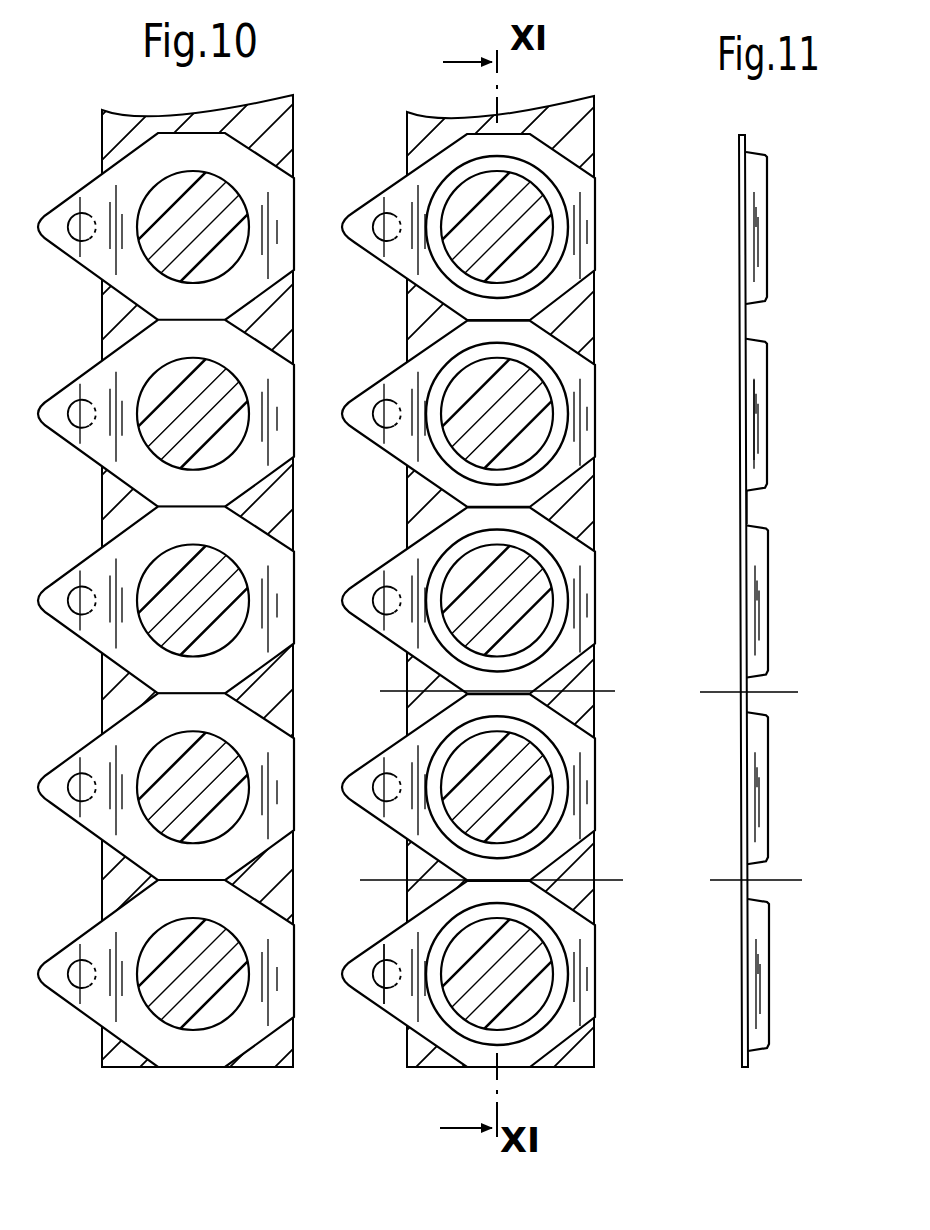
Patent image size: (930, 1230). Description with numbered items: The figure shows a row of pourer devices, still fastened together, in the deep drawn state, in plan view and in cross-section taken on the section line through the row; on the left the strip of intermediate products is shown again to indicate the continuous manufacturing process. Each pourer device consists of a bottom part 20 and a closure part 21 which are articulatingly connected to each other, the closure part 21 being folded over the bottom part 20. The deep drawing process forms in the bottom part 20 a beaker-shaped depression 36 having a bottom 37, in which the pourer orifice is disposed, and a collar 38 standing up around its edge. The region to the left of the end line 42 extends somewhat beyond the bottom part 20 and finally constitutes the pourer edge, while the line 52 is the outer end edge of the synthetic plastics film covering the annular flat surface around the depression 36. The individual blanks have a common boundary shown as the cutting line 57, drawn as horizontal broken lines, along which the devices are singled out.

In FIG. 11, the bottom part 20 is at (766, 208).
In FIG. 11, the closure part 21 is at (737, 163).
In FIG. 10, the beaker-shaped depression 36 is at (467, 170).
In FIG. 11, the beaker-shaped depression 36 is at (757, 418).
In FIG. 10, the bottom 37 is at (454, 191).
In FIG. 11, the bottom 37 is at (769, 371).
In FIG. 11, the collar 38 is at (752, 521).
In FIG. 10, the end line 42 is at (385, 1000).
In FIG. 10, the line 52 is at (404, 1075).
In FIG. 10, the cutting line 57 is at (612, 883).
In FIG. 11, the cutting line 57 is at (778, 691).